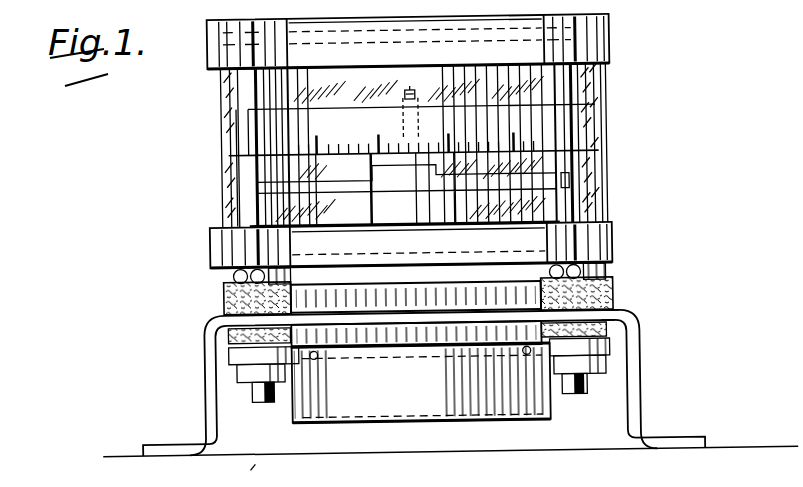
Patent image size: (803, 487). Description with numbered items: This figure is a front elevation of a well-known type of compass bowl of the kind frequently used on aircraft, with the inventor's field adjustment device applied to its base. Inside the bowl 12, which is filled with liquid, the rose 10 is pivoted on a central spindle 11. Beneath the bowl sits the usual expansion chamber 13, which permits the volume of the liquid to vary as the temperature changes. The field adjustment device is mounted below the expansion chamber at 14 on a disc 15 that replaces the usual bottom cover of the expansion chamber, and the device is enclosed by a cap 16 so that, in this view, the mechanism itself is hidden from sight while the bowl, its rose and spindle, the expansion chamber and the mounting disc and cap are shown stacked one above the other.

The rose 10 is at (300, 107).
The central spindle 11 is at (403, 98).
The bowl 12 is at (606, 172).
The expansion chamber 13 is at (382, 303).
The field adjustment device 14 is at (282, 405).
The disc 15 is at (392, 341).
The cap 16 is at (398, 398).